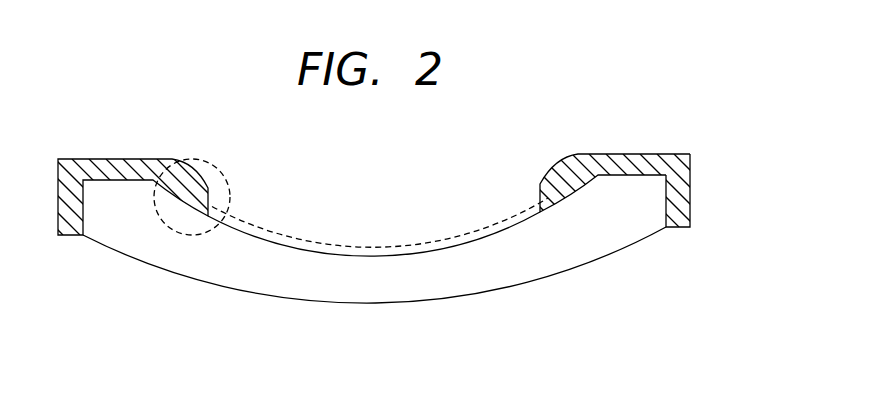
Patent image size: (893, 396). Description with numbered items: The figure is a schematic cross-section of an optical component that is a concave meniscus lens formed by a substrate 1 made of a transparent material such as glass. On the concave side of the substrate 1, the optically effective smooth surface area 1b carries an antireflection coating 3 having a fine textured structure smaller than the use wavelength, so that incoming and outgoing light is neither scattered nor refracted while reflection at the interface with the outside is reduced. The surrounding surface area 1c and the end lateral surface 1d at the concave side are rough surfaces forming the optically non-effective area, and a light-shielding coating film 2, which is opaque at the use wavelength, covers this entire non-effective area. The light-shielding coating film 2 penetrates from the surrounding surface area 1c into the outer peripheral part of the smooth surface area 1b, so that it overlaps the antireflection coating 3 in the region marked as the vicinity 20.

The substrate 1 is at (158, 250).
The smooth surface area 1b is at (373, 258).
The surrounding surface area 1c is at (628, 173).
The end lateral surface 1d is at (677, 199).
The light-shielding coating film 2 is at (75, 167).
The antireflection coating 3 is at (289, 233).
The vicinity 20 is at (192, 157).